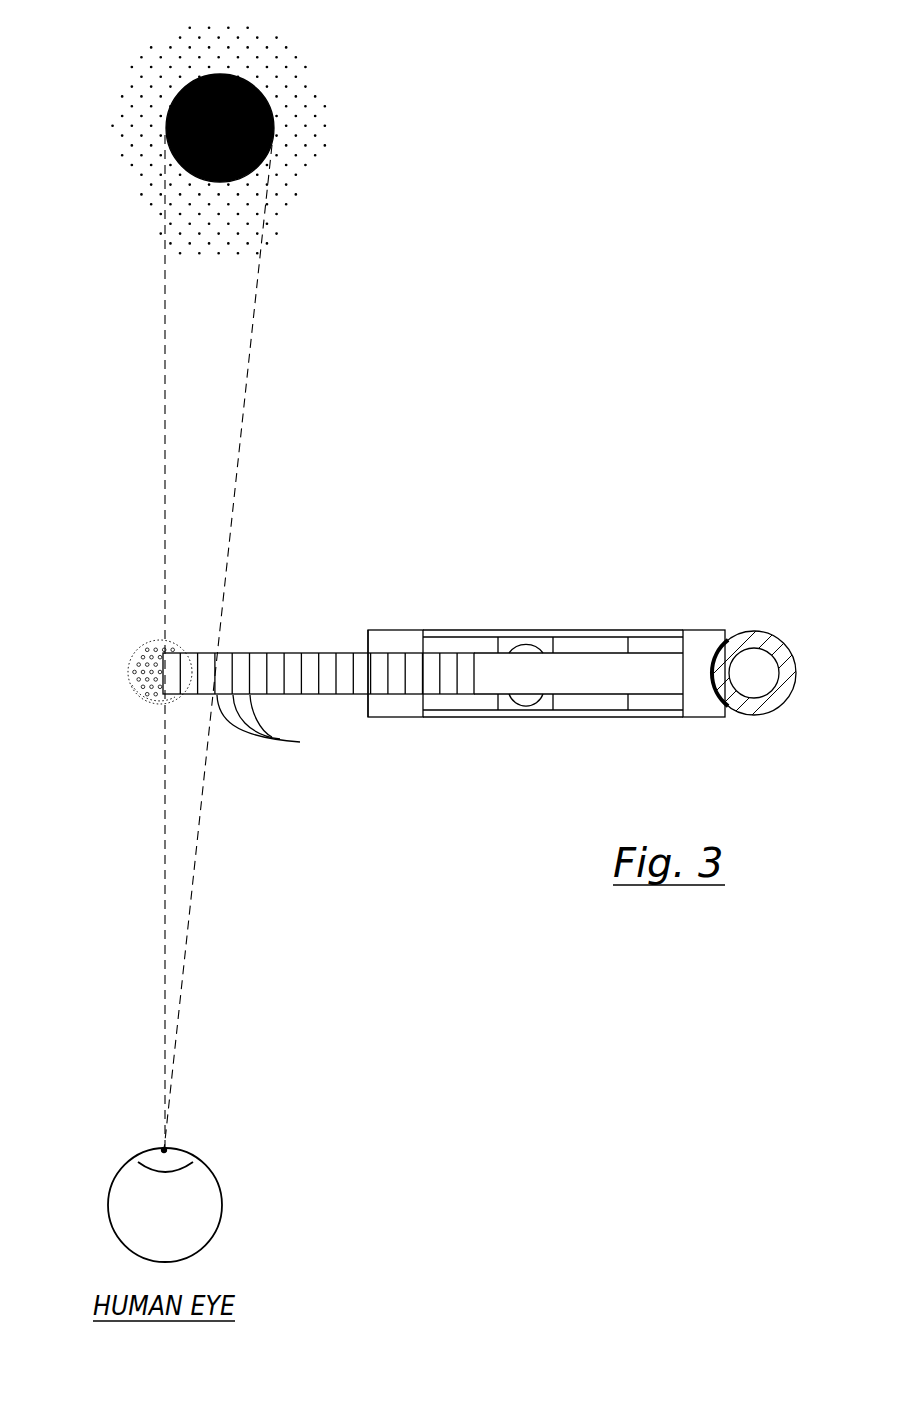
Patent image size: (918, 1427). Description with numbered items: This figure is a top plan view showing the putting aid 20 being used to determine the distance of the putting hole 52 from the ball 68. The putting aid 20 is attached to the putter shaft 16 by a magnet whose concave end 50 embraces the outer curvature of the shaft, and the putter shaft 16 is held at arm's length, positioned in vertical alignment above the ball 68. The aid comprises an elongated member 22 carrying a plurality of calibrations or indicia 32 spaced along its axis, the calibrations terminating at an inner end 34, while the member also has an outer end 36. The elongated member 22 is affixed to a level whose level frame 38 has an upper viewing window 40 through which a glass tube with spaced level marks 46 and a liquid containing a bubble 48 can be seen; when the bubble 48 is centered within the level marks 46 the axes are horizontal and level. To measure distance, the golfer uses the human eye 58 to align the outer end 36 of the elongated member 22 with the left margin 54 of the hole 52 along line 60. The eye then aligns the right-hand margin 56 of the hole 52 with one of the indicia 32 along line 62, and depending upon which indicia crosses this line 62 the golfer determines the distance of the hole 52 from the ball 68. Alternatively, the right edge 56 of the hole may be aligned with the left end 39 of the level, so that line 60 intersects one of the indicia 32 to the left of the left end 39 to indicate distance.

The putter shaft 16 is at (753, 632).
The putting aid 20 is at (152, 699).
The elongated member 22 is at (321, 698).
The indicia 32 is at (275, 727).
The inner end 34 is at (684, 673).
The outer end 36 is at (163, 677).
The level frame 38 is at (385, 633).
The left end 39 is at (370, 638).
The upper viewing window 40 is at (423, 640).
The level marks 46 is at (493, 637).
The bubble 48 is at (525, 641).
The concave end 50 is at (732, 640).
The putting hole 52 is at (186, 84).
The left margin 54 is at (165, 108).
The right-hand margin 56 is at (272, 110).
The human eye 58 is at (200, 1157).
The line 60 is at (162, 357).
The line 62 is at (250, 363).
The ball 68 is at (148, 640).